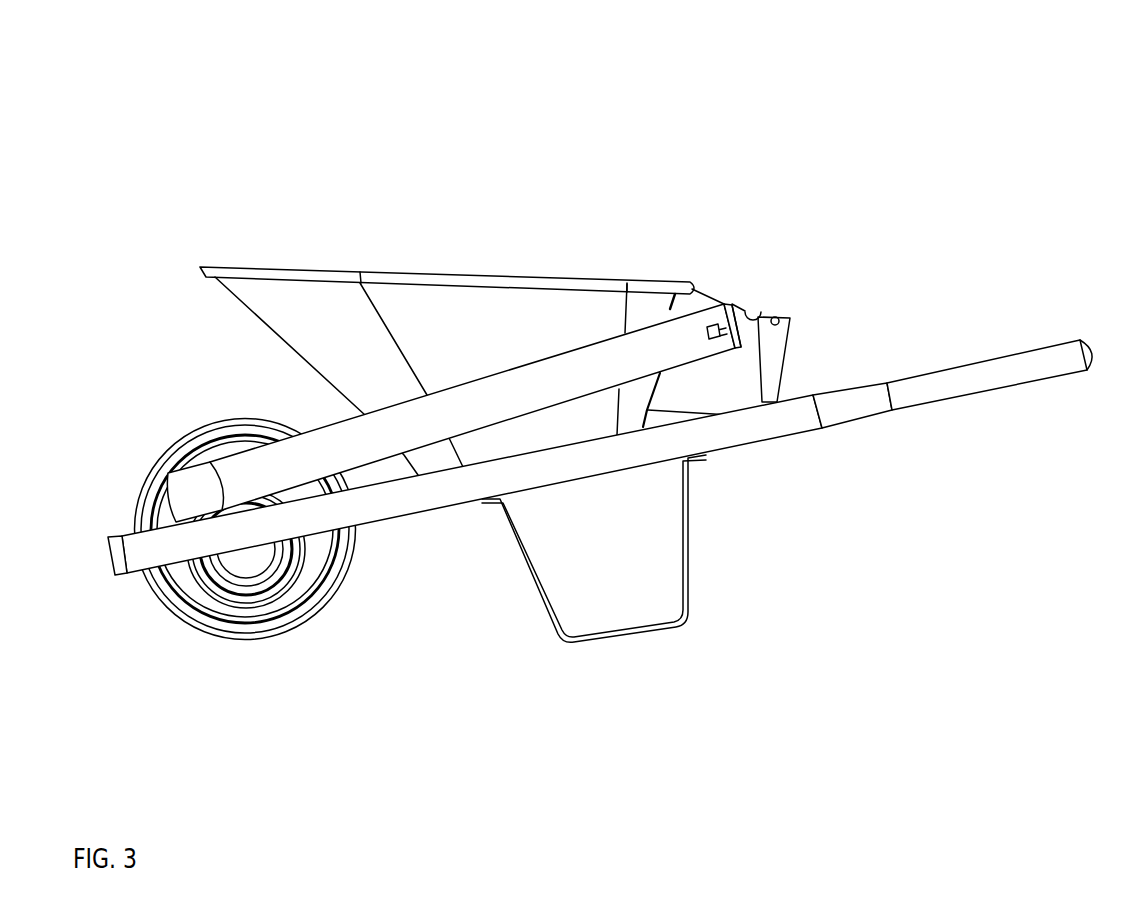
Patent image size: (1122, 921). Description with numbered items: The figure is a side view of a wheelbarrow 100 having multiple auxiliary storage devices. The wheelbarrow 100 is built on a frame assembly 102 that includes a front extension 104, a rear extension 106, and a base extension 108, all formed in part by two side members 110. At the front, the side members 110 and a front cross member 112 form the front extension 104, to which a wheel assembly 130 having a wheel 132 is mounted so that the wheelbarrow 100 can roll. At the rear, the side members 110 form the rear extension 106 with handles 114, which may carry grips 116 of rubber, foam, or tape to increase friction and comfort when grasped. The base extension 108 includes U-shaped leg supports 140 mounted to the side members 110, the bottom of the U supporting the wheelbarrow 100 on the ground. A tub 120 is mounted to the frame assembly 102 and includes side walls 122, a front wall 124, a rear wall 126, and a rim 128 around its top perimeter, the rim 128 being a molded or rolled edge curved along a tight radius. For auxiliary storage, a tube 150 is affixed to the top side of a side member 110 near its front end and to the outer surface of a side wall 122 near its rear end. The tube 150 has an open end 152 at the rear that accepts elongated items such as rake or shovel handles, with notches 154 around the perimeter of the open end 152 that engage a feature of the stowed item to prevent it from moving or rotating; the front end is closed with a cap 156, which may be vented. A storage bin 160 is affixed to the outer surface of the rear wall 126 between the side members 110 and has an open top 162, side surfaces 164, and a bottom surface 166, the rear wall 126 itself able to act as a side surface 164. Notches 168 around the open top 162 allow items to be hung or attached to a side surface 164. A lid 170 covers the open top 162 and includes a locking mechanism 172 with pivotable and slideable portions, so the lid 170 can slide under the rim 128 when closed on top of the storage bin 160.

The wheelbarrow 100 is at (1000, 82).
The frame assembly 102 is at (468, 705).
The front extension 104 is at (108, 648).
The rear extension 106 is at (835, 596).
The base extension 108 is at (620, 683).
The side member 110 is at (748, 435).
The front cross member 112 is at (113, 560).
The handle 114 is at (963, 418).
The grip 116 is at (1047, 370).
The tub 120 is at (412, 243).
The side wall 122 is at (467, 298).
The front wall 124 is at (276, 313).
The rear wall 126 is at (655, 305).
The rim 128 is at (655, 285).
The wheel assembly 130 is at (203, 657).
The wheel 132 is at (267, 617).
The leg support 140 is at (687, 582).
The tube 150 is at (575, 363).
The open end 152 is at (731, 295).
The notch 154 is at (742, 318).
The cap 156 is at (175, 488).
The storage bin 160 is at (782, 279).
The open top 162 is at (780, 302).
The side surface 164 is at (750, 388).
The bottom surface 166 is at (672, 412).
The notch 168 is at (758, 328).
The lid 170 is at (768, 395).
The locking mechanism 172 is at (800, 315).